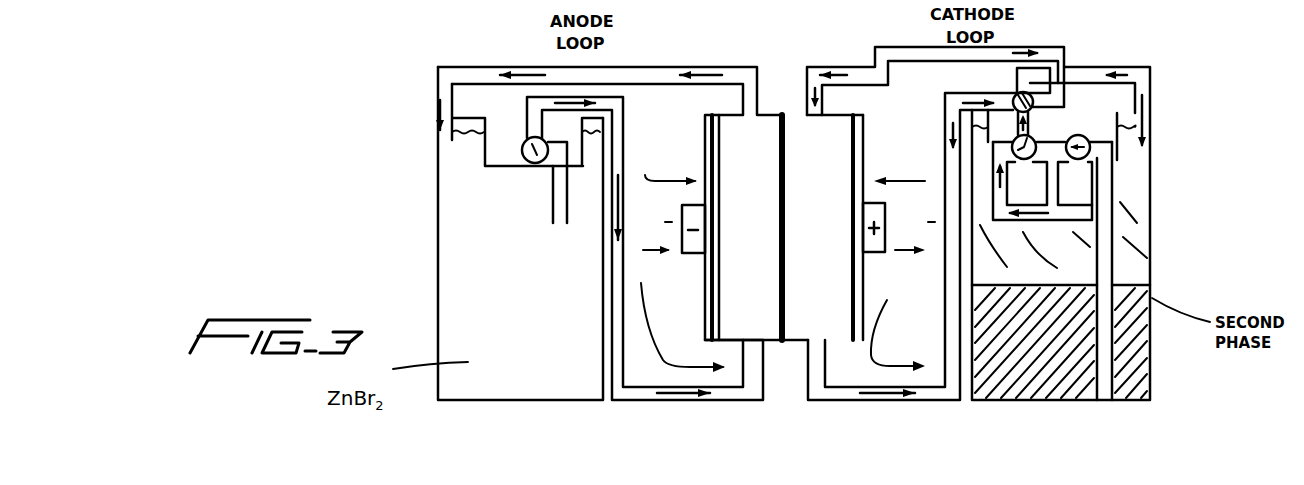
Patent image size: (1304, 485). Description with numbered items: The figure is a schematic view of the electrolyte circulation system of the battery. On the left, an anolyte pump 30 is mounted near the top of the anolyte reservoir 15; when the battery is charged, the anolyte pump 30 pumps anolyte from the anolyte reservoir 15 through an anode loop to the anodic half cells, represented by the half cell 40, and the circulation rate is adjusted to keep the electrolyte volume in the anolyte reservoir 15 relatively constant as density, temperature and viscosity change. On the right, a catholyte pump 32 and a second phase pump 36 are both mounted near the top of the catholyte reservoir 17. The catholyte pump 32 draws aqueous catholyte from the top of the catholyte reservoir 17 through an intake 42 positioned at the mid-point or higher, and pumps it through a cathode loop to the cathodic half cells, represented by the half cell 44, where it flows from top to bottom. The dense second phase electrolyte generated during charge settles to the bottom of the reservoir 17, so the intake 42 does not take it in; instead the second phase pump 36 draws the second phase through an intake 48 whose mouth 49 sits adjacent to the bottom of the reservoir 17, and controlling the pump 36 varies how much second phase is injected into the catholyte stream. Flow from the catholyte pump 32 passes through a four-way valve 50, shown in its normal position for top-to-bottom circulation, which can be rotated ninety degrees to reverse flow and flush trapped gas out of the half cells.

The anolyte reservoir 15 is at (433, 208).
The catholyte reservoir 17 is at (1152, 252).
The anolyte pump 30 is at (520, 160).
The catholyte pump 32 is at (1033, 138).
The second phase pump 36 is at (1083, 136).
The anodic half cell 40 is at (735, 114).
The intake 42 is at (1085, 206).
The cathodic half cell 44 is at (840, 117).
The intake 48 is at (1122, 372).
The mouth 49 is at (1093, 397).
The four-way valve 50 is at (1030, 96).